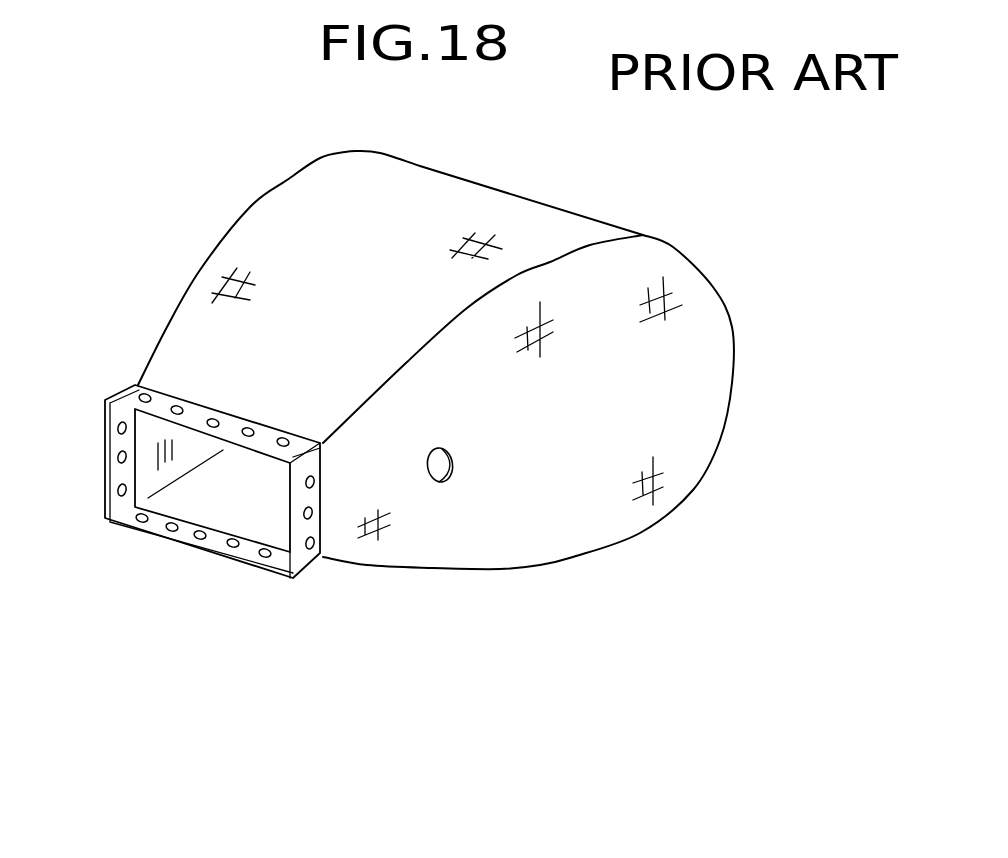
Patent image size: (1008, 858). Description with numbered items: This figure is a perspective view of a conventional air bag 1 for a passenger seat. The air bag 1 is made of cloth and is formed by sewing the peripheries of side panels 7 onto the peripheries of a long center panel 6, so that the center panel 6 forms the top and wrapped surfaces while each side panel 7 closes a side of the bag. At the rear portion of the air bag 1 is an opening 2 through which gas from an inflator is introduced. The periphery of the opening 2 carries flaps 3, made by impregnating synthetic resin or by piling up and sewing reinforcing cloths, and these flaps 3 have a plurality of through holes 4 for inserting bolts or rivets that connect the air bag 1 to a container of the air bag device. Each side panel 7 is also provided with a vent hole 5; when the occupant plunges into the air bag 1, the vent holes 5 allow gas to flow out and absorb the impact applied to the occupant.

The air bag 1 is at (568, 193).
The opening 2 is at (197, 500).
The flaps 3 is at (238, 423).
The mounting hole 4 is at (180, 402).
The vent hole 5 is at (442, 452).
The center panel 6 is at (450, 197).
The side panel 7 is at (527, 543).